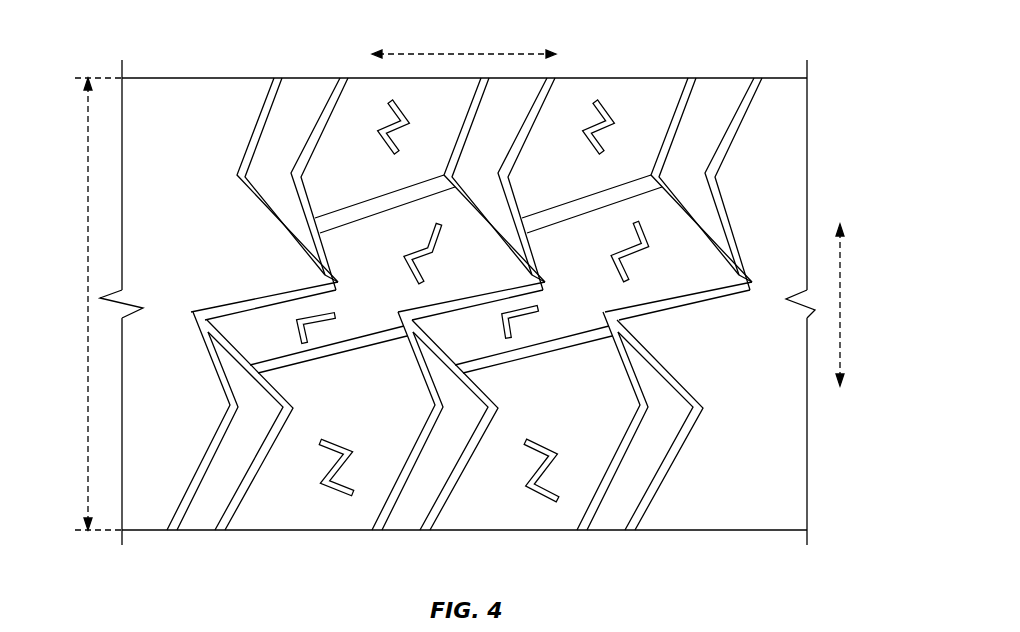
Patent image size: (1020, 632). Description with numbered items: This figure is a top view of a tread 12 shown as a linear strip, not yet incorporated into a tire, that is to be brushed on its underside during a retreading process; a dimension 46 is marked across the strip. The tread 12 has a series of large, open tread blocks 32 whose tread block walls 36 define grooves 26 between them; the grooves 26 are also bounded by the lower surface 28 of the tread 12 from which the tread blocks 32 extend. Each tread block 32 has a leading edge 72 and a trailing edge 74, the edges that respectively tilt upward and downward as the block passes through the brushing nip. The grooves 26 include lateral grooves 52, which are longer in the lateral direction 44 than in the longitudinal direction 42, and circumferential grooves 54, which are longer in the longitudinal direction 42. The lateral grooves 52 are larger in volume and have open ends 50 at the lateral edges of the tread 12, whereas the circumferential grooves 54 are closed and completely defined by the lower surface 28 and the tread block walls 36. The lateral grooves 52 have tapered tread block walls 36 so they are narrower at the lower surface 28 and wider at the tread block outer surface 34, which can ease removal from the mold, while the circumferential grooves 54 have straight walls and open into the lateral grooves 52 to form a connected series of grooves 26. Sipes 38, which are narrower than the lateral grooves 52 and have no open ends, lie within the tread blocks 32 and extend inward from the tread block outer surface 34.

The tread 12 is at (793, 36).
The grooves 26 is at (582, 218).
The lower surface 28 is at (426, 496).
The tread blocks 32 is at (580, 331).
The tread block outer surface 34 is at (490, 507).
The tread block walls 36 is at (307, 148).
The sipes 38 is at (421, 244).
The longitudinal direction 42 is at (478, 54).
The lateral direction 44 is at (846, 312).
The height 46 is at (108, 302).
The open ends 50 is at (505, 77).
The lateral grooves 52 is at (504, 143).
The circumferential grooves 54 is at (340, 364).
The leading edge 72 is at (476, 224).
The trailing edge 74 is at (250, 299).